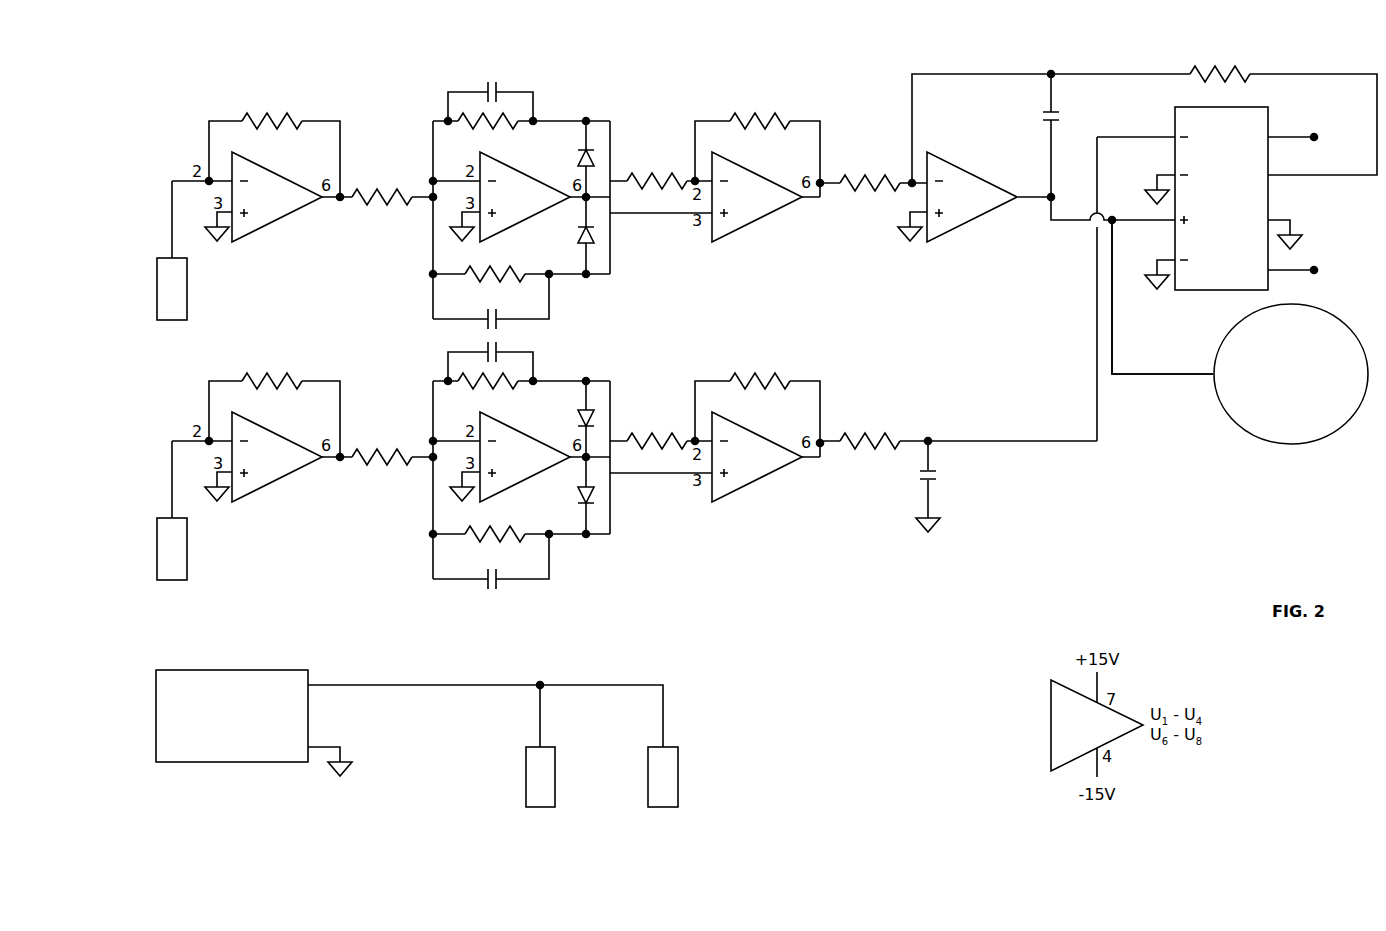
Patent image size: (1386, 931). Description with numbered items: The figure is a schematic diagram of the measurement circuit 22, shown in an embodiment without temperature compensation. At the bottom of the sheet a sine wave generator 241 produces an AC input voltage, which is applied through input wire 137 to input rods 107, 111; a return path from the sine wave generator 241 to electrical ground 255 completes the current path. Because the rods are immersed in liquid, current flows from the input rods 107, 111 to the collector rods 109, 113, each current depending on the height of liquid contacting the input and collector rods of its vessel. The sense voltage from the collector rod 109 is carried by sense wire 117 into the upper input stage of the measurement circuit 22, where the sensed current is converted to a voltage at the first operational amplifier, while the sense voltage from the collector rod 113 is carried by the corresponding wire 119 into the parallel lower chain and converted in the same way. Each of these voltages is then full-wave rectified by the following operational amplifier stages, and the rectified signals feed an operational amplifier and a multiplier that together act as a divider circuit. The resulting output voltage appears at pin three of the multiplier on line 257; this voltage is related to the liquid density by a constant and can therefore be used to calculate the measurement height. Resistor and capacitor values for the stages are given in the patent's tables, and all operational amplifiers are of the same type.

The measurement circuit 22 is at (295, 82).
The sense wire 117 is at (170, 221).
The reference input line 119 is at (170, 481).
The reference vessel collector rod 109 is at (188, 264).
The measurement vessel collector rod 113 is at (188, 524).
The input rod 107 is at (523, 753).
The input rod 111 is at (678, 753).
The sine wave generator 241 is at (233, 670).
The input wire 137 is at (617, 685).
The electrical ground 255 is at (940, 527).
The line 257 is at (1128, 375).